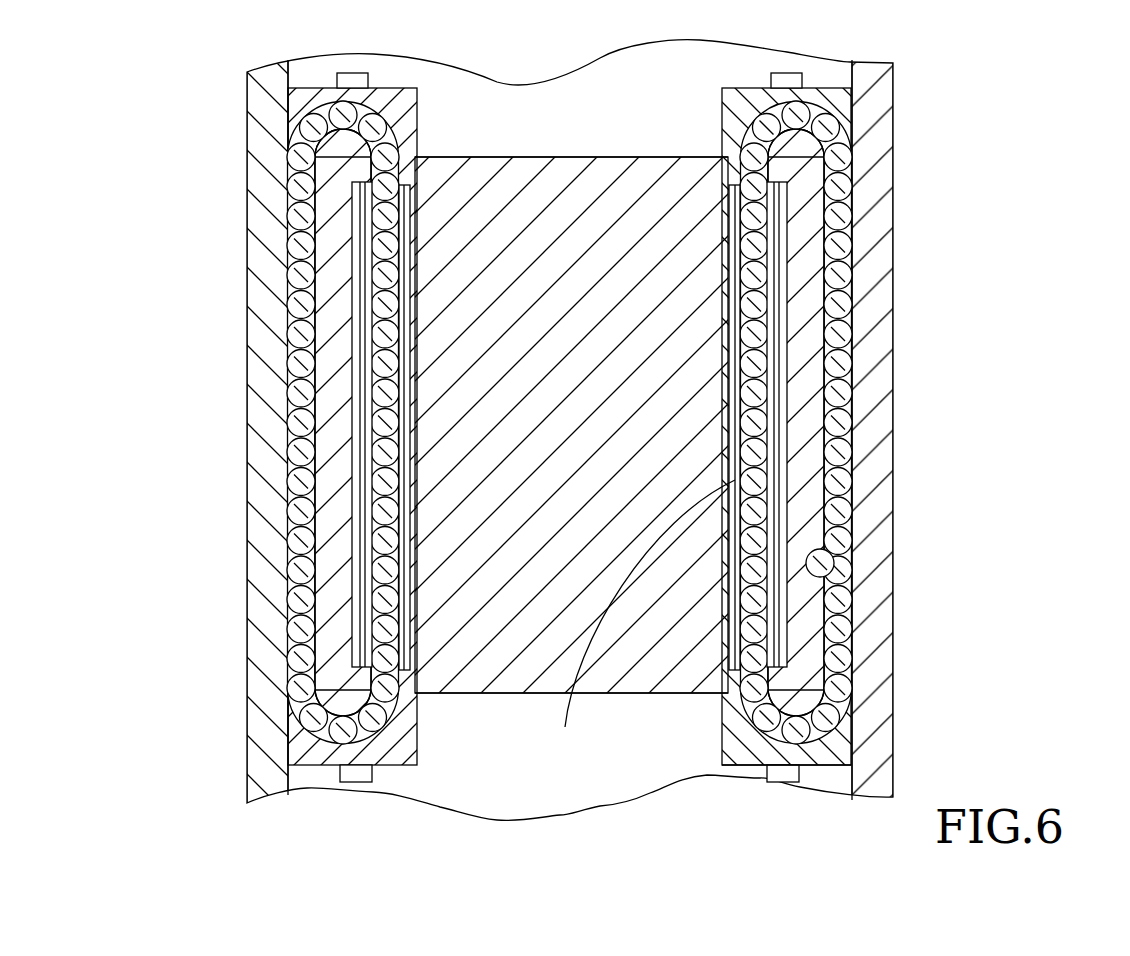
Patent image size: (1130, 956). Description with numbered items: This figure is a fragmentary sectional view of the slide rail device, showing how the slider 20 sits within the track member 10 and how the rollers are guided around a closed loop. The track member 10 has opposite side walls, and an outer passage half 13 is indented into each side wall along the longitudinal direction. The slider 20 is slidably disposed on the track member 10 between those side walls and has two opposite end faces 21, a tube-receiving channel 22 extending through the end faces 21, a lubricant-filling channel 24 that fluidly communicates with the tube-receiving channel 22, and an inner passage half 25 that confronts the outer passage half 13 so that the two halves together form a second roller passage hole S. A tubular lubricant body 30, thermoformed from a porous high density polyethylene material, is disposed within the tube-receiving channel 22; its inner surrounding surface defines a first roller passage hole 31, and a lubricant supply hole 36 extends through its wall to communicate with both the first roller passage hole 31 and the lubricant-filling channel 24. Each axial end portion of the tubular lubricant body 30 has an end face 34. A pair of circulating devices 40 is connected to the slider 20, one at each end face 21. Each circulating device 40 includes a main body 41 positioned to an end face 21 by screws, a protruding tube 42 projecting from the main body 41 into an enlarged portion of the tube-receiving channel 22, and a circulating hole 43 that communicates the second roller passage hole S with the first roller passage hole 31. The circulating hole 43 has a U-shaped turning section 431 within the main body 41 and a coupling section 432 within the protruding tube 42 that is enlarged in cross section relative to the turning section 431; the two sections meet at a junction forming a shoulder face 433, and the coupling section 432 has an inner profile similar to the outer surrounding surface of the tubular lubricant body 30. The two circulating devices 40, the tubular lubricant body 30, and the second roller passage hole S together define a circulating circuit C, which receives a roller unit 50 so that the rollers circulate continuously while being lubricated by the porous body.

The track member 10 is at (895, 153).
The outer passage half 13 is at (853, 245).
The slider 20 is at (505, 157).
The end face 21 is at (618, 155).
The tube-receiving channel 22 is at (641, 620).
The lubricant-filling channel 24 is at (364, 417).
The inner passage half 25 is at (836, 575).
The tubular lubricant body 30 is at (360, 478).
The first roller passage hole 31 is at (775, 367).
The end face 34 is at (362, 689).
The lubricant supply hole 36 is at (777, 417).
The circulating device 40 is at (835, 101).
The main body 41 is at (290, 760).
The protruding tube 42 is at (360, 643).
The circulating hole 43 is at (794, 750).
The turning section 431 is at (788, 768).
The coupling section 432 is at (784, 641).
The shoulder face 433 is at (792, 688).
The roller unit 50 is at (300, 560).
The circulating circuit C is at (288, 331).
The second roller passage hole S is at (853, 280).